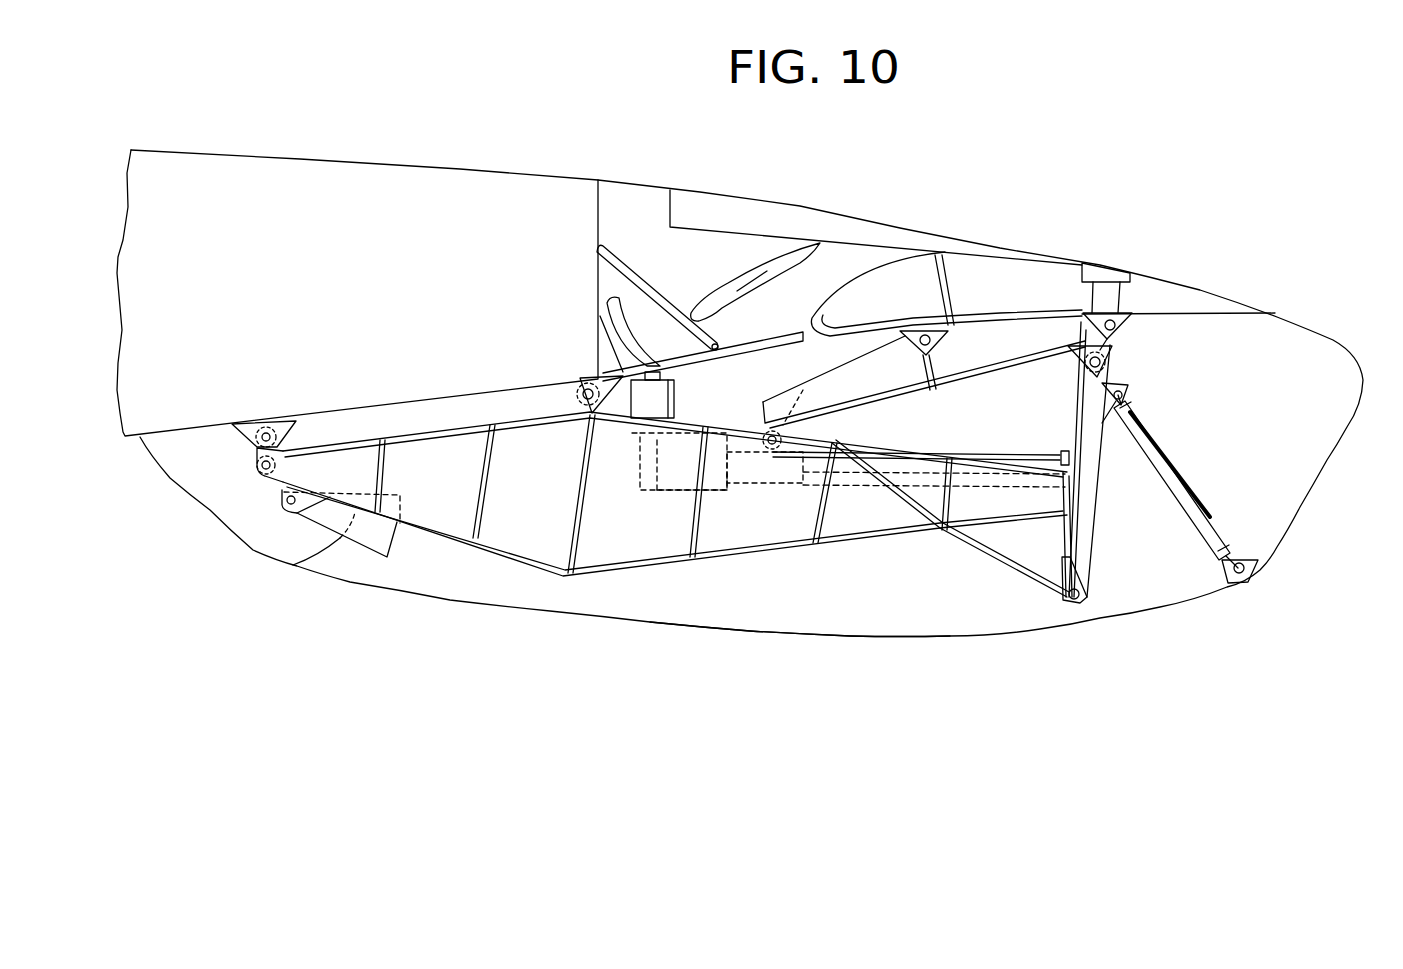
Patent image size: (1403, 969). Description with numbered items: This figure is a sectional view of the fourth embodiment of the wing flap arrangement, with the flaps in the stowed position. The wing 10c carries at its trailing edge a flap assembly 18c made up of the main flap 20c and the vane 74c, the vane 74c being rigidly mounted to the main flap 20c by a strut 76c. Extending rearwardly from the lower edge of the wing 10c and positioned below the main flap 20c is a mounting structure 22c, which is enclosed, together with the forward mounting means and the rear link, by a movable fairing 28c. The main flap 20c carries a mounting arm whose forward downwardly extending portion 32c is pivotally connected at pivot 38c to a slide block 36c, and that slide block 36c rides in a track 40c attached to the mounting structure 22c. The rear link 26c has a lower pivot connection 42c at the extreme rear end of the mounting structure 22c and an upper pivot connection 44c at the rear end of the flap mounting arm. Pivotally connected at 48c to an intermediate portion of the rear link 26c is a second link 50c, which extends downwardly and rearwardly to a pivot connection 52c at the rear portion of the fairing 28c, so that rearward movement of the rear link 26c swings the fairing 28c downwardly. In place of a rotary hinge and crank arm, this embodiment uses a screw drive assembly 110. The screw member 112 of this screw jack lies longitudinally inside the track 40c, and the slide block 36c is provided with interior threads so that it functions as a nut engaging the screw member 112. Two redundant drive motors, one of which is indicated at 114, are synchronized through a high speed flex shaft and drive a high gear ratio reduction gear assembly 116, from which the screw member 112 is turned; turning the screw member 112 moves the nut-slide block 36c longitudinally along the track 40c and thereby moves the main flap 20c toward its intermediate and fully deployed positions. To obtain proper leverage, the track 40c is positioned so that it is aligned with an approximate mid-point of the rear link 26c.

The wing 10c is at (524, 172).
The flap assembly 18c is at (1228, 392).
The main flap 20c is at (1022, 270).
The mounting structure 22c is at (662, 566).
The rear link 26c is at (1088, 529).
The fairing 28c is at (807, 636).
The forward downwardly extending portion of mounting arm 32c is at (917, 380).
The slide block 36c is at (765, 486).
The pivot connection 38c is at (788, 433).
The track 40c is at (850, 483).
The lower pivot connection 42c is at (1075, 602).
The upper pivot connection 44c is at (1115, 360).
The pivot connection 48c is at (1120, 400).
The second link 50c is at (1205, 518).
The pivot connection 52c is at (1240, 576).
The vane 74c is at (718, 283).
The strut 76c is at (828, 265).
The screw drive assembly 110 is at (682, 493).
The screw member 112 is at (991, 452).
The drive motor 114 is at (668, 396).
The reduction gear assembly 116 is at (690, 460).